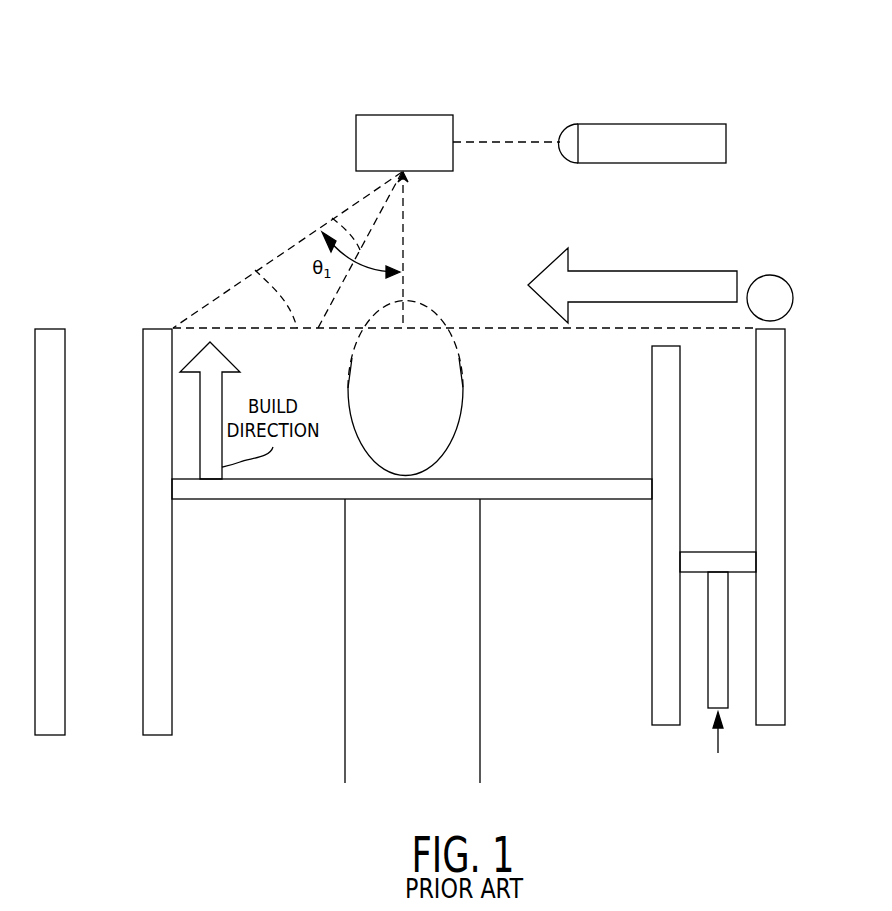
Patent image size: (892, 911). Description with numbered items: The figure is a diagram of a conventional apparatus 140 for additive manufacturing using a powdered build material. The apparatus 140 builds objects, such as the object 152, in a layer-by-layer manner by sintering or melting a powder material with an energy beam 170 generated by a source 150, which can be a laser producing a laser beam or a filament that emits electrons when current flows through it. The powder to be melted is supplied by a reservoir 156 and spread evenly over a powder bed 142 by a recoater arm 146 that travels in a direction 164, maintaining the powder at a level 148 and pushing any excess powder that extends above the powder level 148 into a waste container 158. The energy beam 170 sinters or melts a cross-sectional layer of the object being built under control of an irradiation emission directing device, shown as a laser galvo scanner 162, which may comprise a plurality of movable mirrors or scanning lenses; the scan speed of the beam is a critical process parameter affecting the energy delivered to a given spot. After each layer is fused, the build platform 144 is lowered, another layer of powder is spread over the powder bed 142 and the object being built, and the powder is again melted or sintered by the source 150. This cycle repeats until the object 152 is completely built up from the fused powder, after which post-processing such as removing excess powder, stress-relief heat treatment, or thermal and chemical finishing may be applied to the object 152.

The apparatus 140 is at (186, 72).
The powder bed 142 is at (500, 343).
The build platform 144 is at (605, 479).
The recoater arm 146 is at (770, 275).
The powder level 148 is at (255, 270).
The source 150 is at (623, 124).
The object 152 is at (350, 368).
The reservoir 156 is at (740, 408).
The waste container 158 is at (127, 628).
The laser galvo scanner 162 is at (400, 115).
The direction 164 is at (550, 270).
The energy beam 170 is at (332, 218).